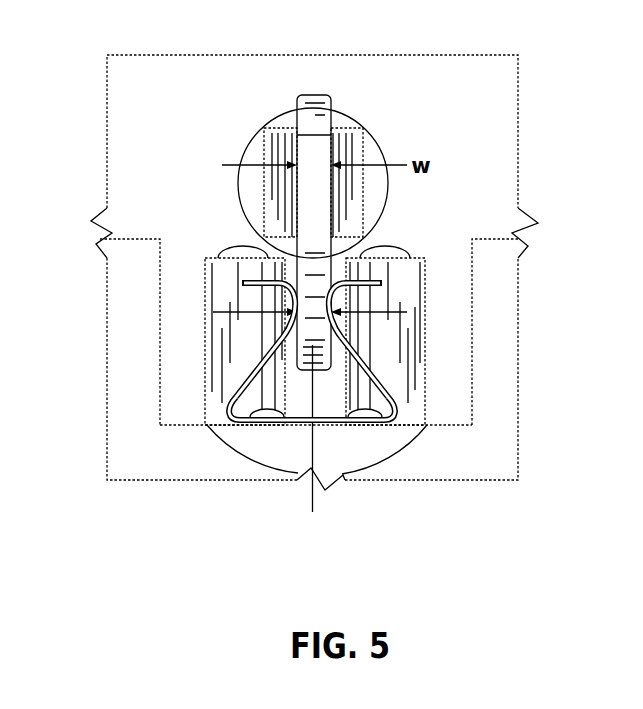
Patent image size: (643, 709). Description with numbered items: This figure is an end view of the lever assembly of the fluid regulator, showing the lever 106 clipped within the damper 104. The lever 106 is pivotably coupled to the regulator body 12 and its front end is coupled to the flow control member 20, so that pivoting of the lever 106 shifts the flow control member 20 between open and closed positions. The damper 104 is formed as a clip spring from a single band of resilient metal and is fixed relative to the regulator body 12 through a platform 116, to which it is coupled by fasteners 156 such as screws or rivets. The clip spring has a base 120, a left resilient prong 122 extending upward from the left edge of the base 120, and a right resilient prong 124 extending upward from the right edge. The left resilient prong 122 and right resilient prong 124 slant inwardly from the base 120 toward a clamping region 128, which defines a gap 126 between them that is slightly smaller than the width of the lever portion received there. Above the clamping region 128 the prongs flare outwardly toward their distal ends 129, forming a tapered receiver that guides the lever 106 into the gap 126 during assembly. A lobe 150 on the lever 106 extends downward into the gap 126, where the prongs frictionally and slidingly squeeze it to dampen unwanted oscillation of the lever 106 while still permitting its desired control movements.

The regulator body 12 is at (500, 428).
The flow control member 20 is at (363, 143).
The damper 104 is at (220, 424).
The lever 106 is at (314, 95).
The platform 116 is at (375, 447).
The base 120 is at (337, 425).
The left resilient prong 122 is at (258, 362).
The right resilient prong 124 is at (372, 367).
The gap 126 is at (378, 315).
The clamping region 128 is at (338, 290).
The distal ends 129 is at (250, 282).
The lobe 150 is at (312, 443).
The fasteners 156 is at (262, 416).